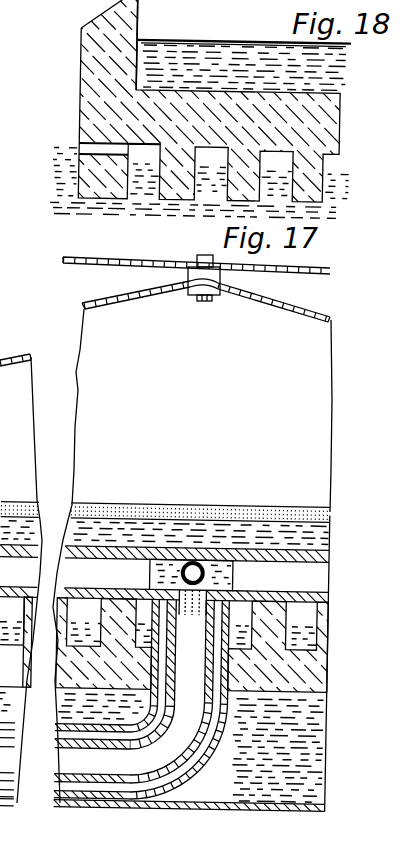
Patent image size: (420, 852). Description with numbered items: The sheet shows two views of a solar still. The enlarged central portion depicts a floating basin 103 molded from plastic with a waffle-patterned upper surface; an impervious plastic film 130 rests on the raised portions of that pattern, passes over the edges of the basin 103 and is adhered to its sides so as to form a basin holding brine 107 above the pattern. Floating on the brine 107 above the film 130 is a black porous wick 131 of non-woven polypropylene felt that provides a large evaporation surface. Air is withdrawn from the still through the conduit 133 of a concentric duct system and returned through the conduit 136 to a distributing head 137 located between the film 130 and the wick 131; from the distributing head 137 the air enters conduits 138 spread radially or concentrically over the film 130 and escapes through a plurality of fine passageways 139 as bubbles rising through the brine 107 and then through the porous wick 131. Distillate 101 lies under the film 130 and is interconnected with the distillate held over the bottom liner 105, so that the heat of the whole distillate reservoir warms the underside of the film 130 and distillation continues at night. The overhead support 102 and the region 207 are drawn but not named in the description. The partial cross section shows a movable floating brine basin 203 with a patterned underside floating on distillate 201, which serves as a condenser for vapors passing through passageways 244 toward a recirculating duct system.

In FIG. 18, the distillate 101 is at (244, 23).
In FIG. 17, the distillate 101 is at (310, 641).
In FIG. 17, the hanger 102 is at (287, 300).
In FIG. 17, the floating basin 103 is at (305, 678).
In FIG. 17, the bottom liner 105 is at (172, 808).
In FIG. 17, the brine 107 is at (129, 531).
In FIG. 17, the impervious plastic film 130 is at (327, 598).
In FIG. 17, the black porous wick 131 is at (82, 514).
In FIG. 17, the conduit 133 is at (206, 745).
In FIG. 17, the conduit 136 is at (104, 766).
In FIG. 17, the distributing head 137 is at (197, 560).
In FIG. 17, the conduits 138 is at (317, 575).
In FIG. 17, the passageways 139 is at (148, 556).
In FIG. 18, the distillate 201 is at (80, 203).
In FIG. 18, the movable floating brine basin 203 is at (137, 25).
In FIG. 18, the reservoir 207 is at (323, 67).
In FIG. 18, the passageways 244 is at (78, 155).